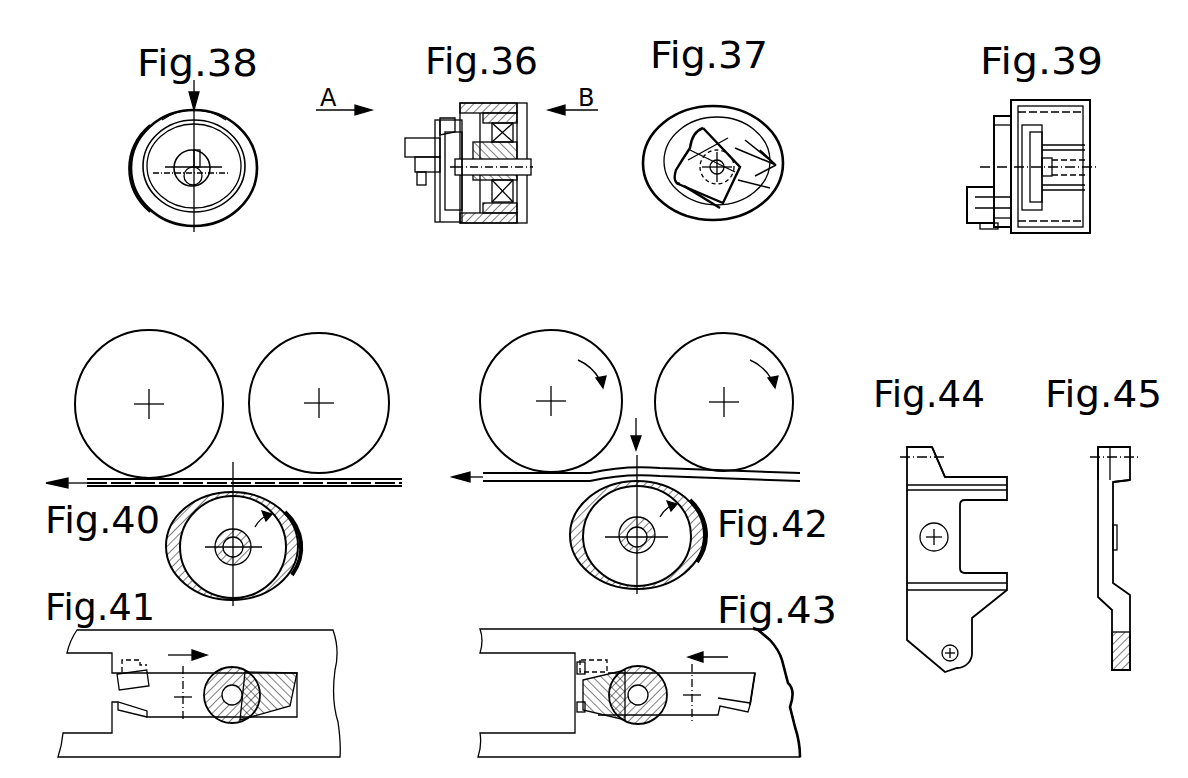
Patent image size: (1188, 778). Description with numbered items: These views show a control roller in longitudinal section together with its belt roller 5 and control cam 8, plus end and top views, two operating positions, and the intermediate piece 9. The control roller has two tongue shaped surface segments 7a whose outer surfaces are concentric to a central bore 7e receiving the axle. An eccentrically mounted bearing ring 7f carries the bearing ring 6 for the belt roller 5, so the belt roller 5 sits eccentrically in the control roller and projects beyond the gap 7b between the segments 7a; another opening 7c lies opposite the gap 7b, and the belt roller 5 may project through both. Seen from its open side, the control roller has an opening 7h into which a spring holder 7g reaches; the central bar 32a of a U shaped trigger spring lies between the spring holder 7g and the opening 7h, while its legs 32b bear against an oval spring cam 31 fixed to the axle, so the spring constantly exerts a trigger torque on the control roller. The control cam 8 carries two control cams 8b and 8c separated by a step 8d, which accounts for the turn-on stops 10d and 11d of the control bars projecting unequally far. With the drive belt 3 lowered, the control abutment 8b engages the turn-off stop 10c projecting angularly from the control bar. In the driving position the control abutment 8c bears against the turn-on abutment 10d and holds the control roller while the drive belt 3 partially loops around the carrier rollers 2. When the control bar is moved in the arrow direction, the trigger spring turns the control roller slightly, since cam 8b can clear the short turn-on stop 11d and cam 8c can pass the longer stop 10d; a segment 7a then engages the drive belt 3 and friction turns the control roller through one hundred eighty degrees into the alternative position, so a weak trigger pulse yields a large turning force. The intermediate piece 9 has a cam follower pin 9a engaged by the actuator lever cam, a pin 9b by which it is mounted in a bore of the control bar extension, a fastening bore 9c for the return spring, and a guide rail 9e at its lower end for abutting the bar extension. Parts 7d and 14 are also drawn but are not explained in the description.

In FIG. 40, the carrier roller 2 is at (384, 408).
In FIG. 42, the carrier roller 2 is at (505, 383).
In FIG. 40, the drive belt 3 is at (390, 479).
In FIG. 42, the drive belt 3 is at (500, 473).
In FIG. 38, the belt roller 5 is at (176, 194).
In FIG. 36, the belt roller 5 is at (490, 222).
In FIG. 40, the belt roller 5 is at (270, 572).
In FIG. 42, the belt roller 5 is at (594, 522).
In FIG. 36, the bearing ring 6 is at (522, 226).
In FIG. 38, the tongue shaped surface segment 7a is at (136, 207).
In FIG. 40, the tongue shaped surface segment 7a is at (284, 533).
In FIG. 42, the tongue shaped surface segment 7a is at (582, 566).
In FIG. 38, the gap 7b is at (187, 110).
In FIG. 38, the opening 7c is at (187, 229).
In FIG. 36, the hub 7d is at (448, 221).
In FIG. 37, the hub 7d is at (680, 195).
In FIG. 38, the concentric bore 7e is at (186, 174).
In FIG. 36, the concentric bore 7e is at (522, 172).
In FIG. 38, the eccentrically mounted bearing ring 7f is at (192, 167).
In FIG. 36, the eccentrically mounted bearing ring 7f is at (520, 165).
In FIG. 37, the spring holder 7g is at (701, 131).
In FIG. 37, the opening 7h is at (772, 216).
In FIG. 37, the control cam 8 is at (760, 192).
In FIG. 36, the control cam 8b is at (407, 163).
In FIG. 37, the control cam 8b is at (765, 156).
In FIG. 41, the control cam 8b is at (276, 707).
In FIG. 43, the control cam 8b is at (595, 690).
In FIG. 36, the control cam 8c is at (424, 186).
In FIG. 37, the control cam 8c is at (776, 182).
In FIG. 43, the control cam 8c is at (600, 714).
In FIG. 36, the step 8d is at (421, 174).
In FIG. 44, the intermediate piece 9 is at (975, 605).
In FIG. 44, the cam follower pin 9a is at (946, 472).
In FIG. 45, the cam follower pin 9a is at (1106, 459).
In FIG. 44, the pin 9b is at (948, 537).
In FIG. 45, the pin 9b is at (1120, 539).
In FIG. 44, the fastening bore 9c is at (958, 657).
In FIG. 45, the fastening bore 9c is at (1116, 655).
In FIG. 44, the guide rail 9e is at (985, 500).
In FIG. 45, the guide rail 9e is at (1120, 488).
In FIG. 41, the turn-off stop 10c is at (292, 700).
In FIG. 43, the turn-off stop 10c is at (752, 705).
In FIG. 43, the turn-on abutment 10d is at (578, 708).
In FIG. 43, the turn-on stop 11d is at (582, 688).
In FIG. 36, the spring 14 is at (441, 131).
In FIG. 37, the spring cam 31 is at (740, 215).
In FIG. 37, the central bar 32a is at (690, 150).
In FIG. 37, the legs 32b is at (705, 200).